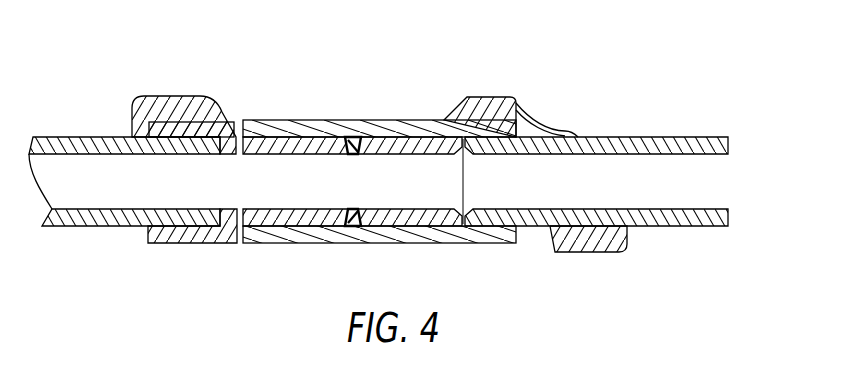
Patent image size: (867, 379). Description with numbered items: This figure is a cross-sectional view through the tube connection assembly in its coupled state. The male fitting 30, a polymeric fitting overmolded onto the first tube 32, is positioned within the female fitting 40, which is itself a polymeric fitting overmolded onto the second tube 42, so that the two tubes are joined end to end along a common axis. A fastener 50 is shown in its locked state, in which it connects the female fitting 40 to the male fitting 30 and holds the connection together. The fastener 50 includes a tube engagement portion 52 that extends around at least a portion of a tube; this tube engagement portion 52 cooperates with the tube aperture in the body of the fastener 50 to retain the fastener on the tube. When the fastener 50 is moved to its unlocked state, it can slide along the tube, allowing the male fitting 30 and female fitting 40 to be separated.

The male fitting 30 is at (195, 243).
The first tube 32 is at (72, 137).
The female fitting 40 is at (385, 127).
The second tube 42 is at (668, 213).
The fastener 50 is at (177, 105).
The tube engagement portion 52 is at (583, 252).